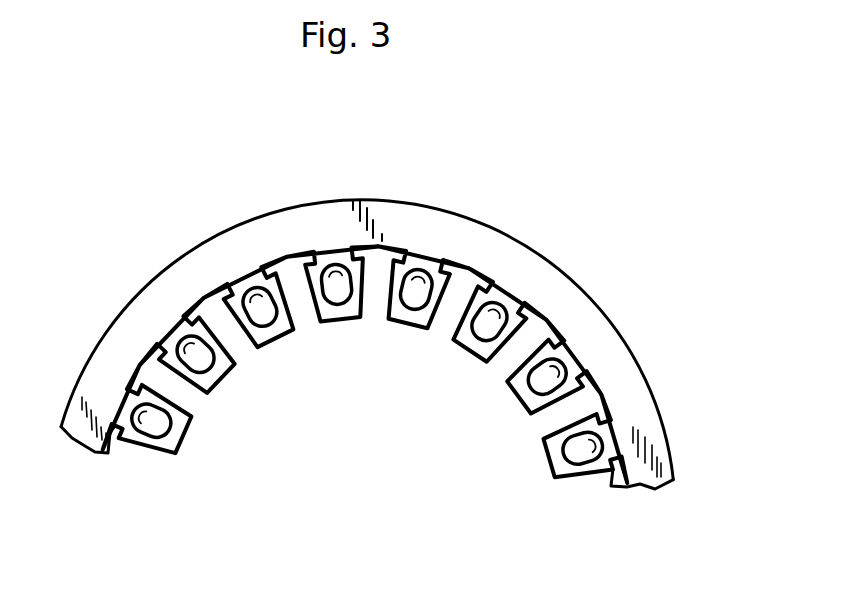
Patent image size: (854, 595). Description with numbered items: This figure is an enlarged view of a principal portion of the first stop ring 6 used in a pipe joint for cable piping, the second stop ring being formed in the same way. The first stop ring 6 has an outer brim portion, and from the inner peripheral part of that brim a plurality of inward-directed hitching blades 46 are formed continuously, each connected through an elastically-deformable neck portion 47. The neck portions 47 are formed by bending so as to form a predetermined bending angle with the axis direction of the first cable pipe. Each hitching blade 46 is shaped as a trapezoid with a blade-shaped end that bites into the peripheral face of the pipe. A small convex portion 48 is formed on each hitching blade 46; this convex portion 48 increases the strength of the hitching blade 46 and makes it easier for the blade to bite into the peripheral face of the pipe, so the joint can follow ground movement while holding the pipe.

The first stop ring 6 is at (432, 186).
The hitching blade 46 is at (183, 450).
The neck portion 47 is at (126, 400).
The small convex portion 48 is at (544, 370).